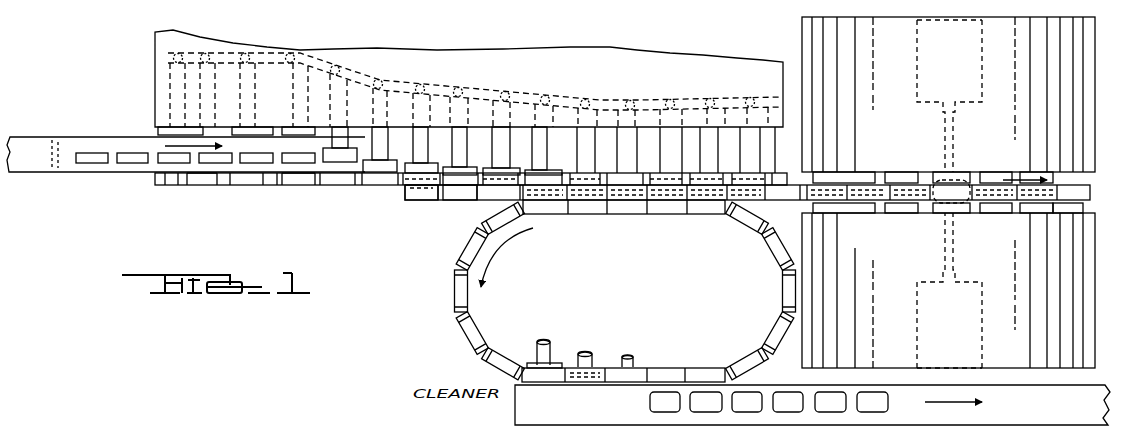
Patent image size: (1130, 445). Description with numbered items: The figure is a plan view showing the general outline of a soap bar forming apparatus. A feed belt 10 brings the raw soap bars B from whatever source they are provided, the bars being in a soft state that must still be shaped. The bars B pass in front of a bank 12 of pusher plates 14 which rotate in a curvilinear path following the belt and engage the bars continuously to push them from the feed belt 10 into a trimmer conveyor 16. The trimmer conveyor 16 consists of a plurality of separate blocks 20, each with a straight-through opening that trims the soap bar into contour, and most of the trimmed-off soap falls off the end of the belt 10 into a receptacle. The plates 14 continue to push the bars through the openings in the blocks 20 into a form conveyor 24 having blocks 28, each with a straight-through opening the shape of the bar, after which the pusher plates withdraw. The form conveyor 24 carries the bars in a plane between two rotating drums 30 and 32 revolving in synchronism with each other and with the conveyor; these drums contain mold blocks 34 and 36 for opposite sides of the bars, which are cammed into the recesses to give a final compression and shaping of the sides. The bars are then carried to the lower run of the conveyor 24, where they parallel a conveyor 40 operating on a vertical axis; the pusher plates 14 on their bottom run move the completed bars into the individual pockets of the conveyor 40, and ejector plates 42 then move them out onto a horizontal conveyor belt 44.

The feed belt 10 is at (36, 163).
The bars B is at (95, 163).
The bank of pusher plates 12 is at (165, 83).
The pusher plates 14 is at (336, 157).
The trimmer conveyor 16 is at (248, 188).
The blocks 20 is at (194, 186).
The form conveyor 24 is at (422, 208).
The blocks 28 is at (409, 191).
The rotating drum 30 is at (1053, 32).
The rotating drum 32 is at (1003, 263).
The mold blocks 34 is at (862, 171).
The mold blocks 36 is at (900, 214).
The conveyor 40 is at (488, 334).
The ejector plates 42 is at (557, 362).
The horizontal conveyor belt 44 is at (688, 418).